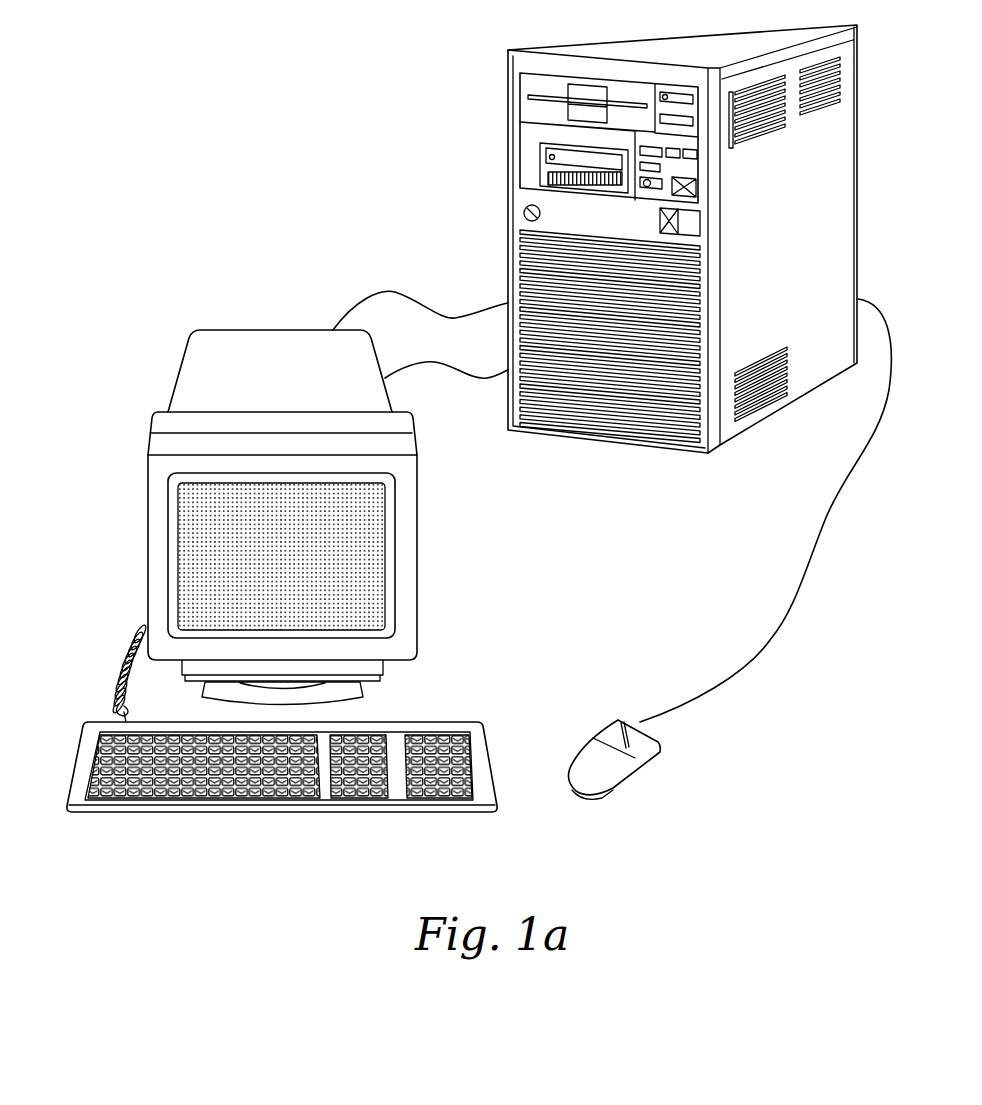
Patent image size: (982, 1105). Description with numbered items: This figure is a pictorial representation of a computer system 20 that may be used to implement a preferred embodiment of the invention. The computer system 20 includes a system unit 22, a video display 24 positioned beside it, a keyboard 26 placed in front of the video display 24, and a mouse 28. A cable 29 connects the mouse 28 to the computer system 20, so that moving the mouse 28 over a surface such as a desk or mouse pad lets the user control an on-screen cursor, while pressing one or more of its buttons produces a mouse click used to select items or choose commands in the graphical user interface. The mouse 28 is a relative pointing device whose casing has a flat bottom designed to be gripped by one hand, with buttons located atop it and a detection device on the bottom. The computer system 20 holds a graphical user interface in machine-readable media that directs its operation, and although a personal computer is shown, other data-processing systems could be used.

The computer system 20 is at (304, 209).
The system unit 22 is at (527, 200).
The video display 24 is at (293, 350).
The keyboard 26 is at (310, 807).
The mouse 28 is at (620, 775).
The cable 29 is at (765, 643).